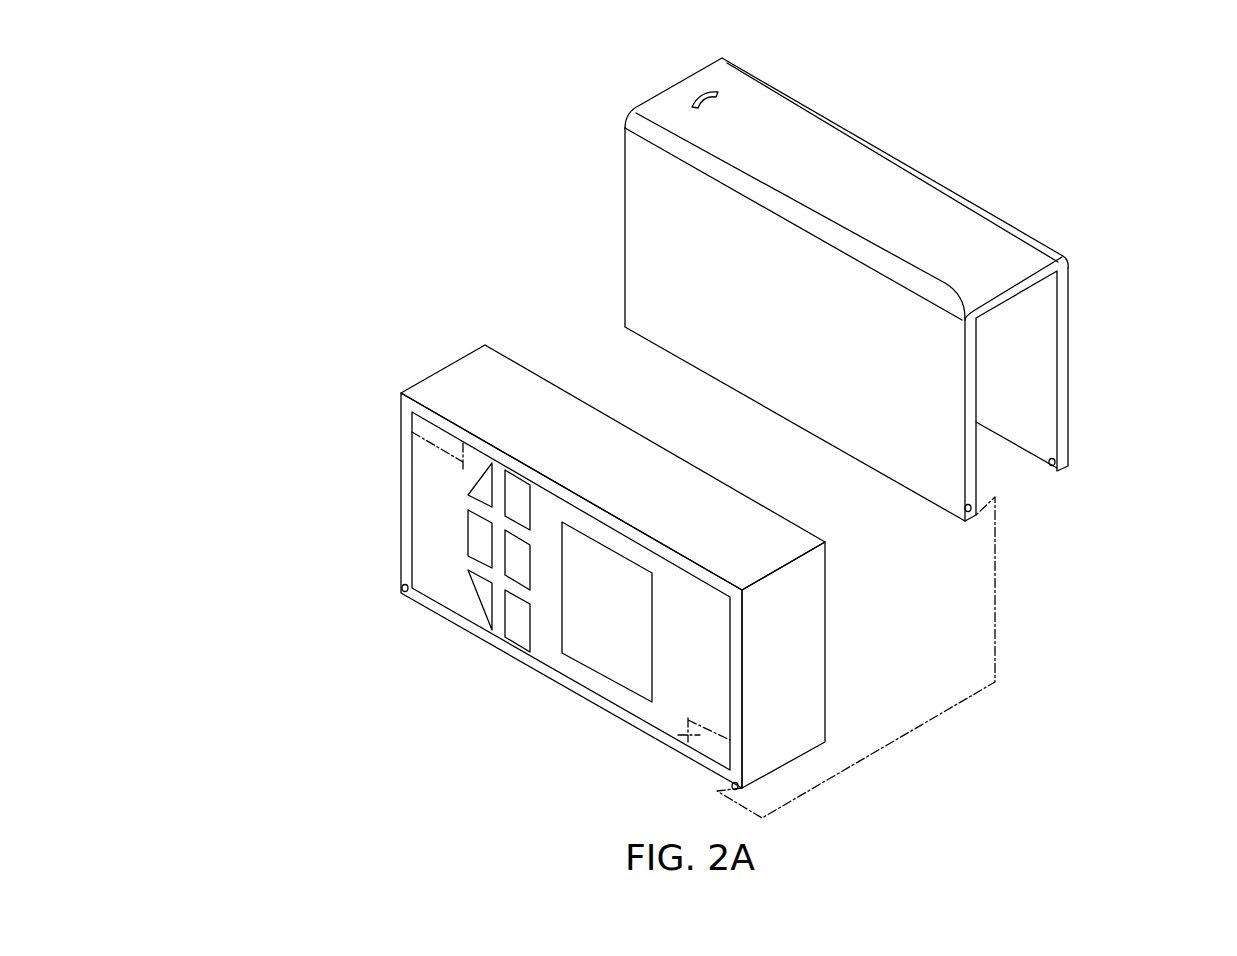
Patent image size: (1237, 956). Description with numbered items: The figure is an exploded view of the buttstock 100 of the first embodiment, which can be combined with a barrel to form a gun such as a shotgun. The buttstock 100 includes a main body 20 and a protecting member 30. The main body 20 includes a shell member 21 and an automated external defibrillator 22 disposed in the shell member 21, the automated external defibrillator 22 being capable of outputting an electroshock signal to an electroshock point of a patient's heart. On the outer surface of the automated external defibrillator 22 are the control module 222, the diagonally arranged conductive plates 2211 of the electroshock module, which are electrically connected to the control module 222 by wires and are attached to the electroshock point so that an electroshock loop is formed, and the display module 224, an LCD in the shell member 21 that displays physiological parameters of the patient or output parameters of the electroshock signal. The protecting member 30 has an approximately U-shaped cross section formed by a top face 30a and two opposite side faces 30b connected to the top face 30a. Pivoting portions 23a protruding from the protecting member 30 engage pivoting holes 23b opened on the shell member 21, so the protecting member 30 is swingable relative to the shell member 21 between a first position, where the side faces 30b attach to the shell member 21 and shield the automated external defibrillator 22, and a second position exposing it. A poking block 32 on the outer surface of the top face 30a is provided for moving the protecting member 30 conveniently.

The buttstock 100 is at (208, 82).
The main body 20 is at (656, 538).
The shell member 21 is at (440, 397).
The automated external defibrillator 22 is at (464, 587).
The control module 222 is at (511, 633).
The display module 224 is at (607, 565).
The conductive plates 2211 is at (412, 432).
The pivoting portions 23a is at (1068, 468).
The pivoting holes 23b is at (732, 787).
The protecting member 30 is at (874, 275).
The top face 30a is at (968, 245).
The side faces 30b is at (655, 203).
The poking block 32 is at (697, 97).